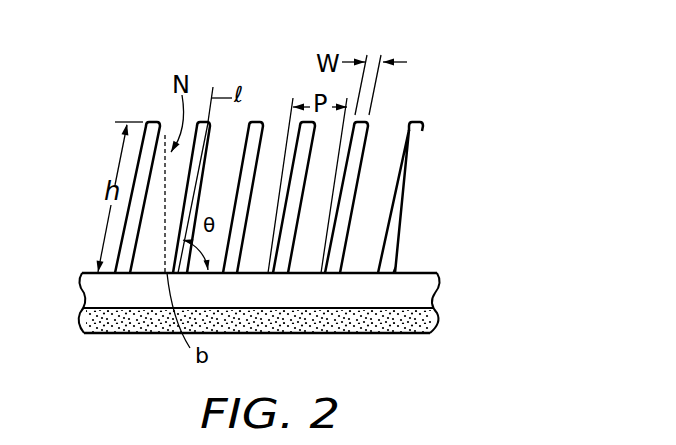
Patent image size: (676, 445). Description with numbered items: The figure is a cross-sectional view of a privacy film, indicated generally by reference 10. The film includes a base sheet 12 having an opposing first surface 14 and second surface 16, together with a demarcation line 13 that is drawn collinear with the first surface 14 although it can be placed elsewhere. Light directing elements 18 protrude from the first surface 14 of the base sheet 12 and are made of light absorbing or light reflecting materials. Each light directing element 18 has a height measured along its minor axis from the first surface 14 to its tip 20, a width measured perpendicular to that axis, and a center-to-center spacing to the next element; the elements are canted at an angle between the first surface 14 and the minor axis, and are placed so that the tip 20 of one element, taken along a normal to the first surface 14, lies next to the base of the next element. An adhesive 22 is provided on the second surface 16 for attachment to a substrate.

The cooling fin / pin array assembly 10 is at (435, 60).
The base sheet 12 is at (413, 288).
The demarcation line 13 is at (389, 273).
The first surface 14 is at (413, 272).
The second surface 16 is at (408, 332).
The light directing elements 18 is at (415, 172).
The tip 20 is at (420, 121).
The adhesive 22 is at (138, 320).